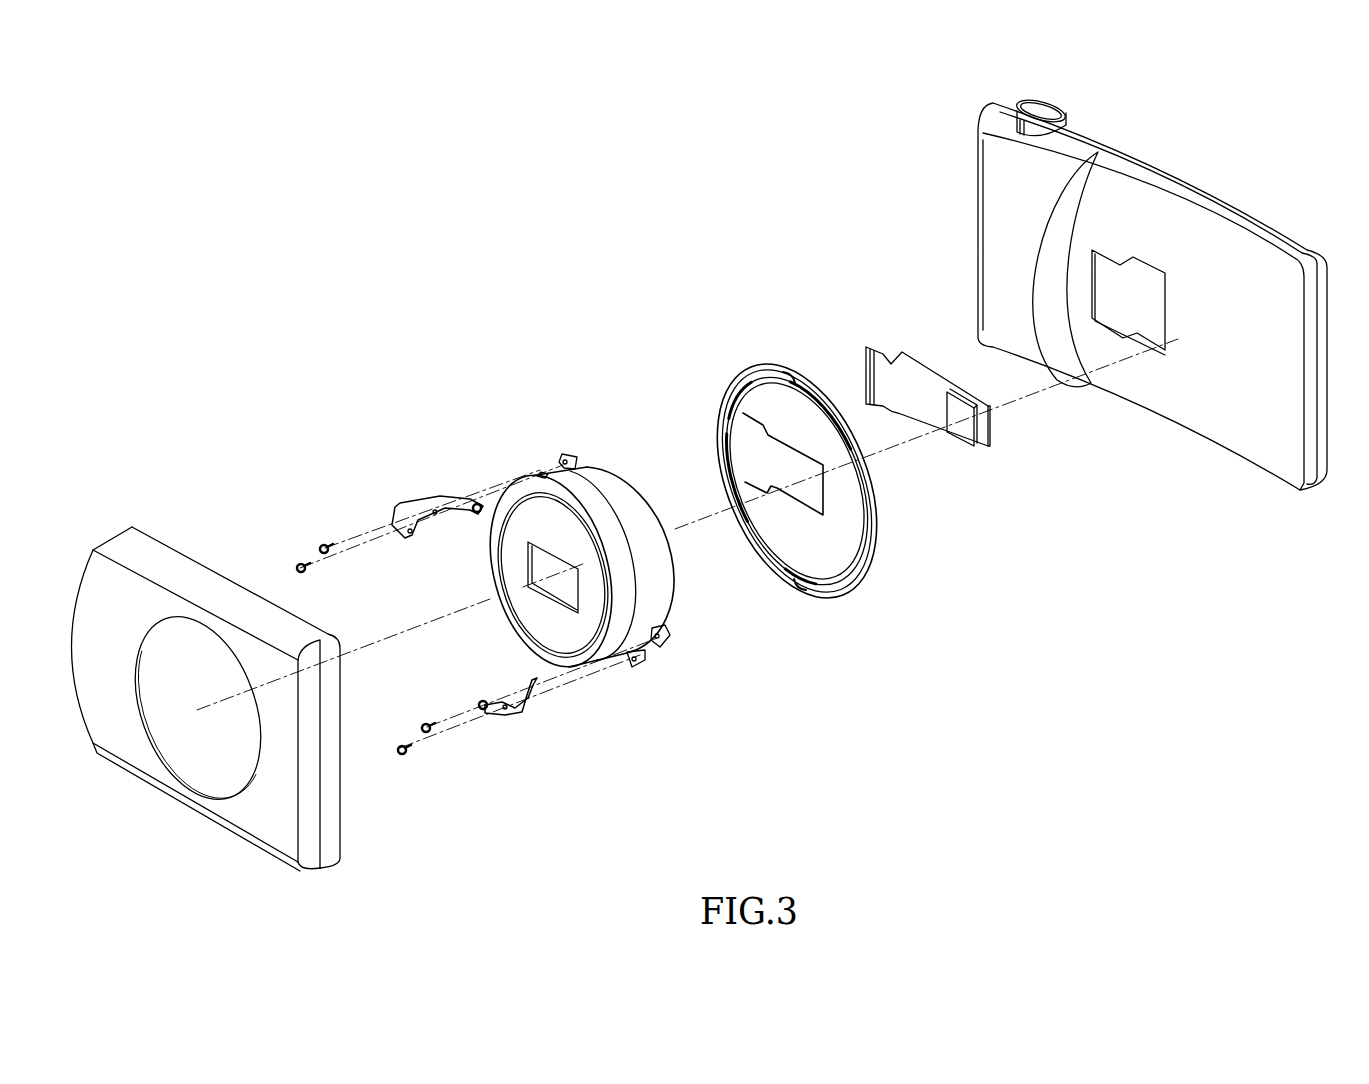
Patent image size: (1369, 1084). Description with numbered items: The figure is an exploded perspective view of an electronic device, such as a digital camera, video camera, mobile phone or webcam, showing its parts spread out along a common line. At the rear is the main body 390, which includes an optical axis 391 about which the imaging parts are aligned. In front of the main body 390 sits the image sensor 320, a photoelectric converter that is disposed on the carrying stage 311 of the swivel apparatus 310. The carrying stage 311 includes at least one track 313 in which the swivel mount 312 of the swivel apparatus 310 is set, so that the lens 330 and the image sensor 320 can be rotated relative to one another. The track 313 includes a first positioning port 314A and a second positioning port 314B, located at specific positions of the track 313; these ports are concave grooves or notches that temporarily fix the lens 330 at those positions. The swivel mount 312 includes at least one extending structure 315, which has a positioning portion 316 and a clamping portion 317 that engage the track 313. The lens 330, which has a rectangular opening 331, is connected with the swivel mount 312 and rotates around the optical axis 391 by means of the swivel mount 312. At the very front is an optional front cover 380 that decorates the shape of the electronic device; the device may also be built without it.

The swivel apparatus 310 is at (617, 298).
The carrying stage 311 is at (777, 479).
The swivel mount 312 is at (469, 558).
The track 313 is at (720, 490).
The first positioning port 314A is at (793, 378).
The second positioning port 314B is at (725, 438).
The extending structure 315 is at (452, 467).
The positioning portion 316 is at (457, 494).
The clamping portion 317 is at (479, 502).
The image sensor 320 is at (964, 428).
The lens 330 is at (573, 573).
The rectangular opening 331 is at (540, 573).
The front cover 380 is at (133, 560).
The main body 390 is at (1152, 305).
The optical axis 391 is at (1022, 399).